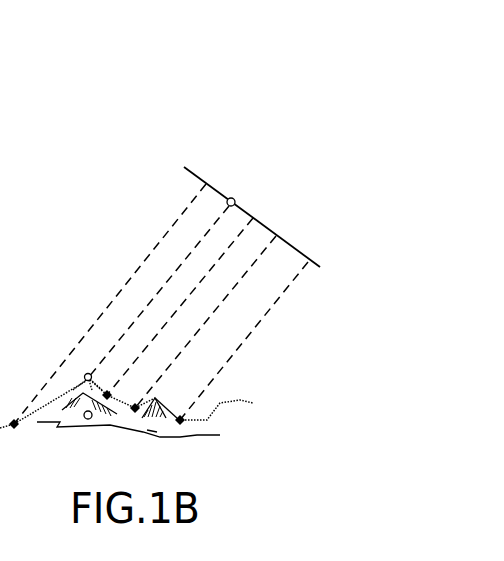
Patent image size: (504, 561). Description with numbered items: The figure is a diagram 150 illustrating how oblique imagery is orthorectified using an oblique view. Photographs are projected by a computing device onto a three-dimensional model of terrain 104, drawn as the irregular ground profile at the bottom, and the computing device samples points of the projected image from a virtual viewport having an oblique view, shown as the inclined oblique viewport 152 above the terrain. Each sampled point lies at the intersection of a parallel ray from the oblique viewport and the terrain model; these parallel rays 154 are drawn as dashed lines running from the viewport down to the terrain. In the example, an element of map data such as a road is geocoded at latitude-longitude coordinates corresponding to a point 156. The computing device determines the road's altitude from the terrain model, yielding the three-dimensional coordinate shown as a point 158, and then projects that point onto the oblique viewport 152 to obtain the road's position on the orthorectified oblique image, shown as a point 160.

The diagram 150 is at (254, 84).
The oblique viewport 152 is at (266, 226).
The scan lines 154 is at (243, 342).
The point 156 is at (85, 418).
The point 158 is at (88, 373).
The point 160 is at (232, 197).
The terrain 104 is at (146, 408).